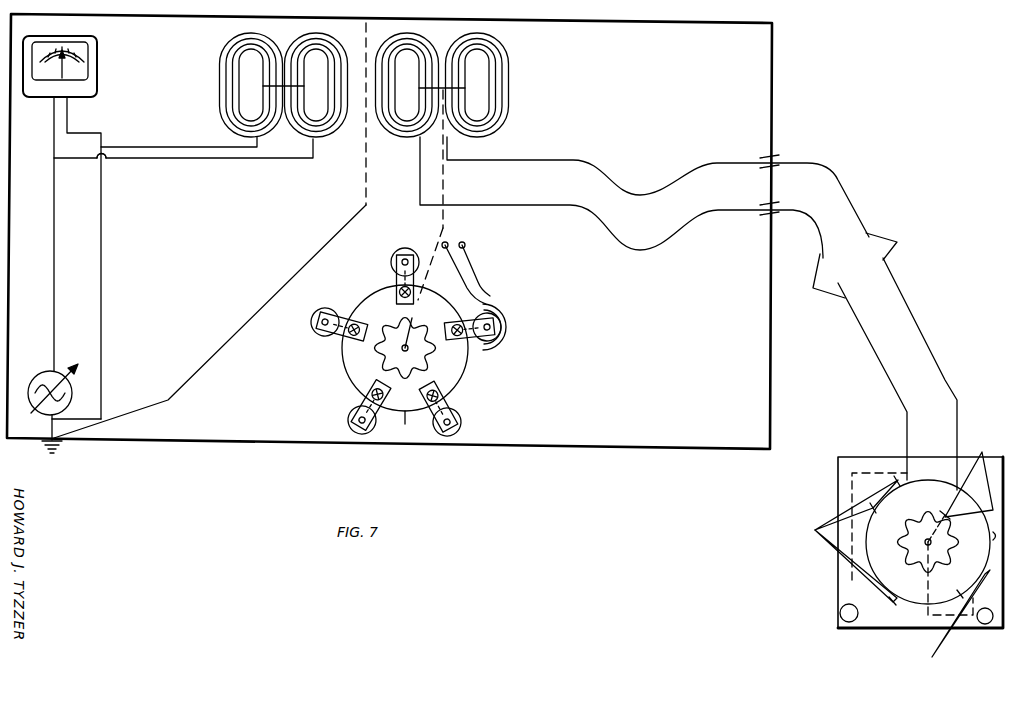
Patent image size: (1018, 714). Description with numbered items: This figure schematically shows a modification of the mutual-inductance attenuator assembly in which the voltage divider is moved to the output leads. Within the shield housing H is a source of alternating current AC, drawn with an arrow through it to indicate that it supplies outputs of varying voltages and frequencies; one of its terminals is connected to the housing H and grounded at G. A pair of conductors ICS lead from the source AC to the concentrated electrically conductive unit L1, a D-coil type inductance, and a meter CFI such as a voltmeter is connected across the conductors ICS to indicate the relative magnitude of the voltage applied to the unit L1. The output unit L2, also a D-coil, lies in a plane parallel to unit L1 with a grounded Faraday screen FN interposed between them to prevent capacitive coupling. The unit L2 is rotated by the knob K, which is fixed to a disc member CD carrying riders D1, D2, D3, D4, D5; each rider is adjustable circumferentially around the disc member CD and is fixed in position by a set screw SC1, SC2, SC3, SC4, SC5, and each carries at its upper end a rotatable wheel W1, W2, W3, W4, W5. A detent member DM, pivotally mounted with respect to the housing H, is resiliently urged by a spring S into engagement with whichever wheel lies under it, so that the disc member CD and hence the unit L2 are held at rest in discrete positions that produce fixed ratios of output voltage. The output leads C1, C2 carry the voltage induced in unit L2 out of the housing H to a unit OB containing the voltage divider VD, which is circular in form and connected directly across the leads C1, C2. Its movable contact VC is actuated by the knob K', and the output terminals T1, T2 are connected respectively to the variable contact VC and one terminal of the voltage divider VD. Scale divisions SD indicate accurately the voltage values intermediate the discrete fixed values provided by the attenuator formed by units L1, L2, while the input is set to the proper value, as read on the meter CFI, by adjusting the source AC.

The shield housing H is at (389, 224).
The meter CFI is at (60, 37).
The conductors ICS is at (110, 151).
The Faraday screen FN is at (362, 171).
The concentrated electrically conductive unit L1 is at (284, 76).
The output unit L2 is at (442, 76).
The output lead C1 is at (898, 242).
The output lead C2 is at (812, 288).
The knob K is at (425, 348).
The disc member CD is at (398, 425).
The rotatable wheel W1 is at (473, 319).
The rotatable wheel W2 is at (461, 429).
The rotatable wheel W3 is at (349, 430).
The rotatable wheel W4 is at (311, 323).
The rotatable wheel W5 is at (405, 267).
The set screw SC1 is at (498, 314).
The set screw SC2 is at (440, 398).
The set screw SC3 is at (369, 395).
The set screw SC4 is at (350, 339).
The set screw SC5 is at (398, 292).
The rider D1 is at (478, 340).
The rider D2 is at (456, 405).
The rider D3 is at (358, 404).
The rider D4 is at (338, 336).
The rider D5 is at (397, 279).
The detent member DM is at (511, 327).
The spring S is at (470, 264).
The source of alternating current AC is at (40, 376).
The ground G is at (62, 452).
The outer box OB is at (1004, 457).
The variable contact VC is at (928, 542).
The voltage divider VD is at (979, 537).
The knob K' is at (927, 581).
The scale divisions SD is at (885, 551).
The output terminal T1 is at (1004, 630).
The output terminal T2 is at (840, 612).